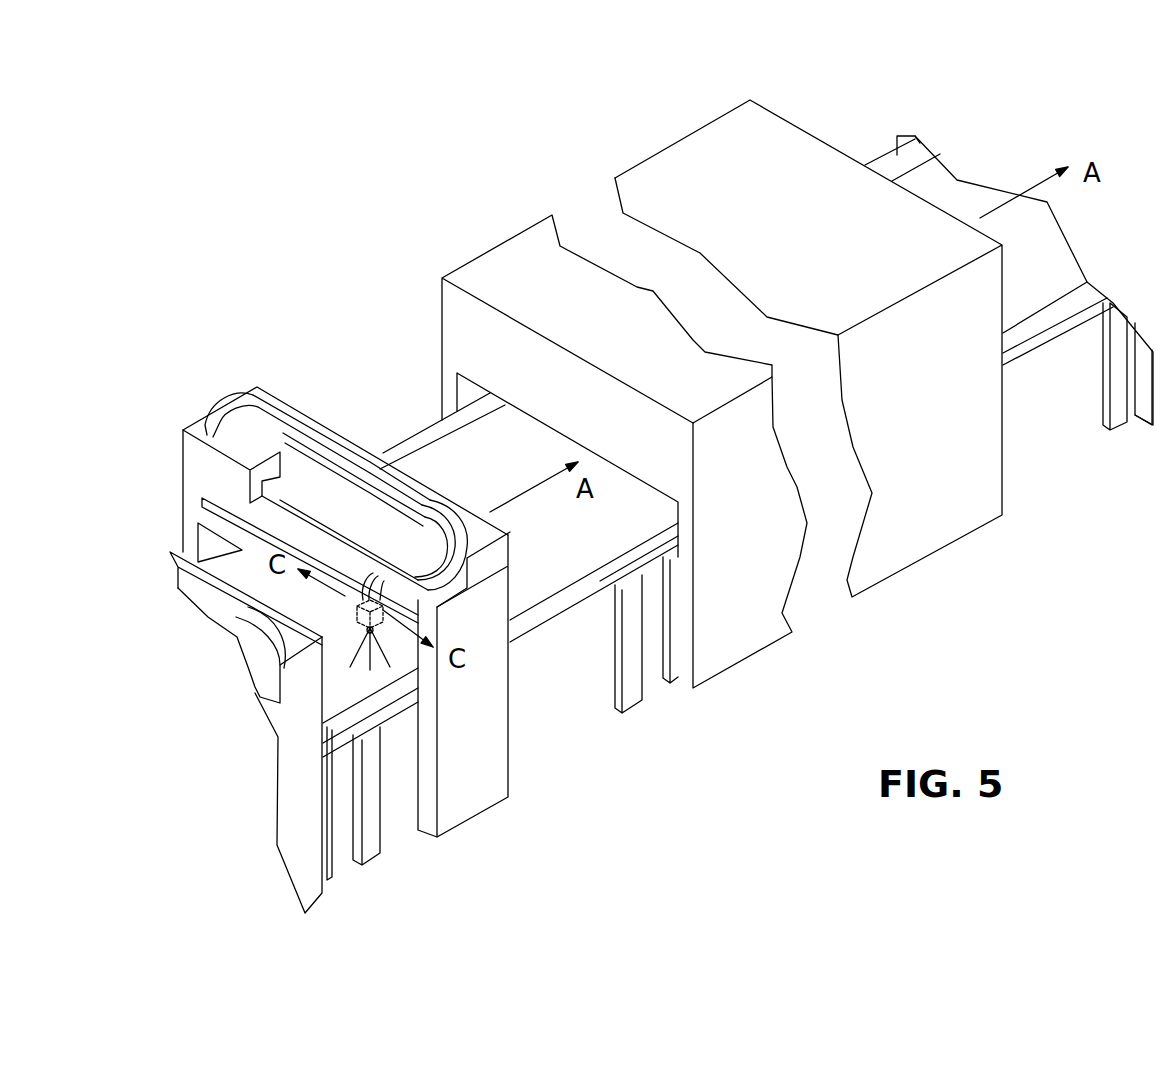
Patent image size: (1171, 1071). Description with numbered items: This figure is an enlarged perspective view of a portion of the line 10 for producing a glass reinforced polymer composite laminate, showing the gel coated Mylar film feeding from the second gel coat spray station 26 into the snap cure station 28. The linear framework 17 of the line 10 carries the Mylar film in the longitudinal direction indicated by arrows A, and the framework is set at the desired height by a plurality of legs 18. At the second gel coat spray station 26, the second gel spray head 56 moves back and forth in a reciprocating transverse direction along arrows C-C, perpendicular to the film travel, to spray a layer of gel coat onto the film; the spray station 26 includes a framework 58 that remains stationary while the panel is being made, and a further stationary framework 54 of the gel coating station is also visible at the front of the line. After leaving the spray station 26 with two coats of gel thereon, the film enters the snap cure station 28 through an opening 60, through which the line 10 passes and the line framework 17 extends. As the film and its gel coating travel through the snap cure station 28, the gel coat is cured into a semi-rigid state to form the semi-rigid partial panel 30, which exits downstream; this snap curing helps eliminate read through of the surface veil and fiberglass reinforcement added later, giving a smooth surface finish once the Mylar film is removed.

The line 10 is at (1037, 118).
The linear framework 17 is at (530, 648).
The legs 18 is at (632, 700).
The second gel coat spray station 26 is at (206, 395).
The snap cure station 28 is at (470, 260).
The semi-rigid partial panel 30 is at (1057, 253).
The framework 54 is at (313, 883).
The second gel spray head 56 is at (443, 631).
The framework 58 is at (473, 783).
The opening 60 is at (452, 383).